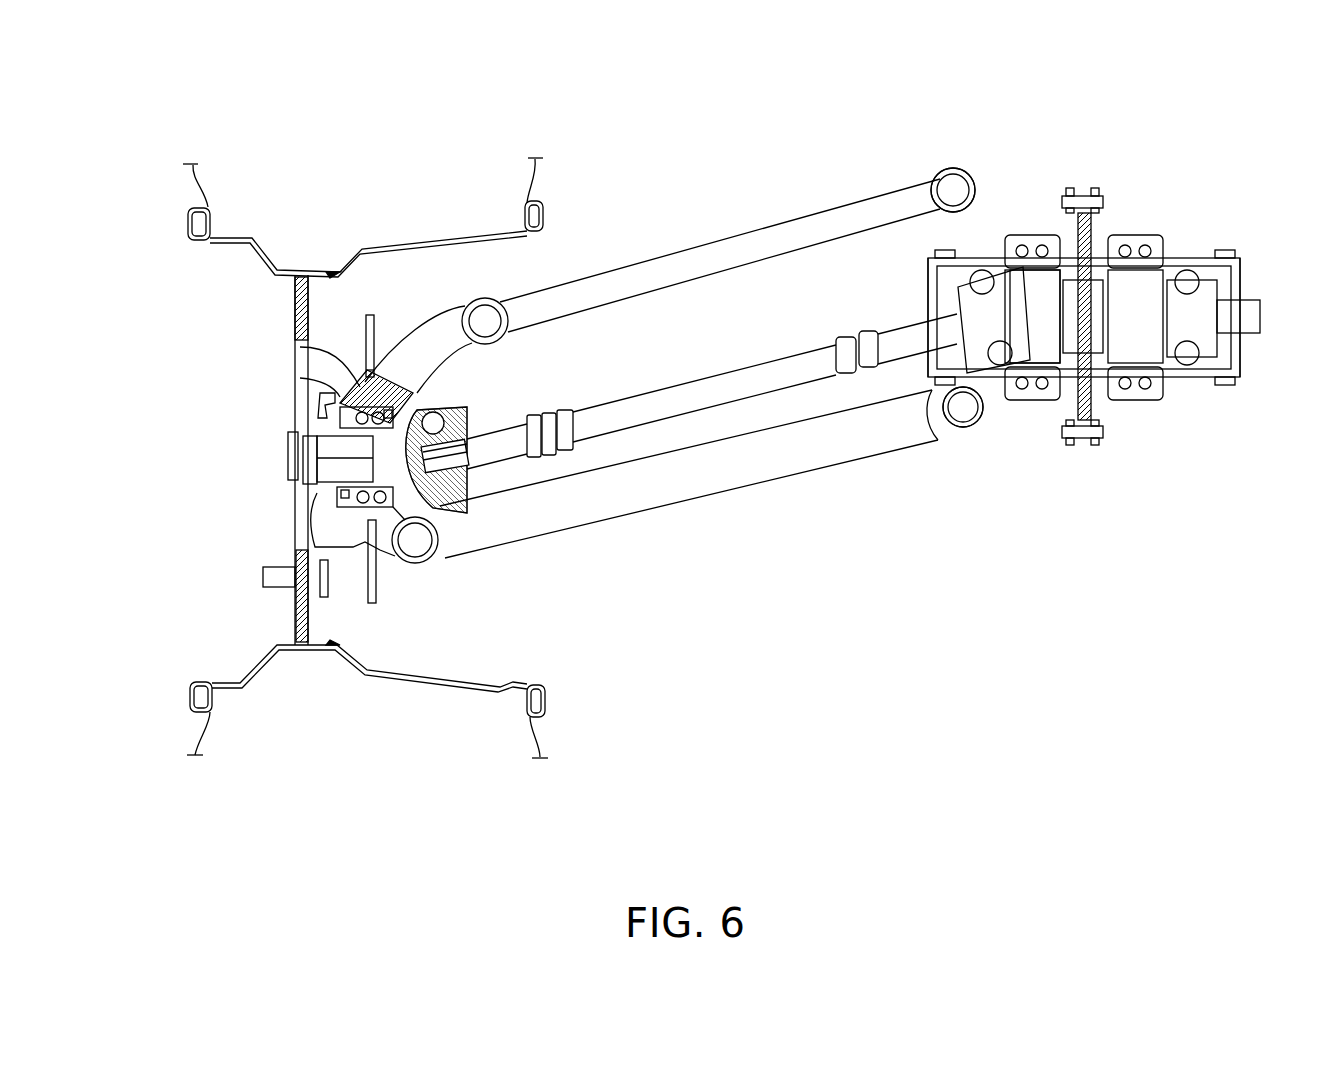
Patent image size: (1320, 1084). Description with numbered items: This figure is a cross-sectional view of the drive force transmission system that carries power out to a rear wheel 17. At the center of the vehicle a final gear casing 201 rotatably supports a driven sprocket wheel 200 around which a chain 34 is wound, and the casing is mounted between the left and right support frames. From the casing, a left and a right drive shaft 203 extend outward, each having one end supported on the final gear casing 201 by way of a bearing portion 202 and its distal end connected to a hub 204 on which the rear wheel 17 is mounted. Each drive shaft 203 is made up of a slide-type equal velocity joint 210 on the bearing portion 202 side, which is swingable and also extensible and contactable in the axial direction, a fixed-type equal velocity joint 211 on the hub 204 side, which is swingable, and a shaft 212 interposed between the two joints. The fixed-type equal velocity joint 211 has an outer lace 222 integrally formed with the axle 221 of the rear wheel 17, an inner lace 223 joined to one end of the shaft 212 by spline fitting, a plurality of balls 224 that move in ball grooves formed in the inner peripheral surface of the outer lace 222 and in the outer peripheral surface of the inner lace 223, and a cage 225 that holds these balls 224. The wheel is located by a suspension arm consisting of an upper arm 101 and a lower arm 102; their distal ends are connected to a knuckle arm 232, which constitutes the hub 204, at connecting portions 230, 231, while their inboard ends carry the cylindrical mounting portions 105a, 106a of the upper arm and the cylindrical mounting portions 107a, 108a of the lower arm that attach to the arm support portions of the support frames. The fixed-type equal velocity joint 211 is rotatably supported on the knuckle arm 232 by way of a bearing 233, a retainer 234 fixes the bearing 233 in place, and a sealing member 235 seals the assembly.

The rear wheel 17 is at (294, 383).
The chain 34 is at (1072, 445).
The upper arm 101 is at (648, 275).
The lower arm 102 is at (692, 490).
The cylindrical mounting portion 105a is at (948, 167).
The cylindrical mounting portion 106a is at (953, 190).
The lower link vehicle-side end 107a is at (988, 427).
The cylindrical mounting portion 108a is at (963, 407).
The driven sprocket wheel 200 is at (1108, 405).
The final gear casing 201 is at (1133, 236).
The bearing portion 202 is at (1011, 243).
The drive shaft 203 is at (785, 370).
The hub 204 is at (340, 550).
The slide-type equal velocity joint 210 is at (932, 386).
The fixed-type equal velocity joint 211 is at (457, 518).
The shaft 212 is at (843, 375).
The axle 221 is at (355, 457).
The outer lace 222 is at (435, 405).
The inner lace 223 is at (470, 481).
The ball 224 is at (455, 407).
The cage 225 is at (452, 424).
The connecting portion 230 is at (497, 290).
The connecting portion 231 is at (420, 565).
The knuckle arm 232 is at (428, 337).
The bearing 233 is at (300, 347).
The retainer 234 is at (300, 378).
The sealing member 235 is at (337, 488).